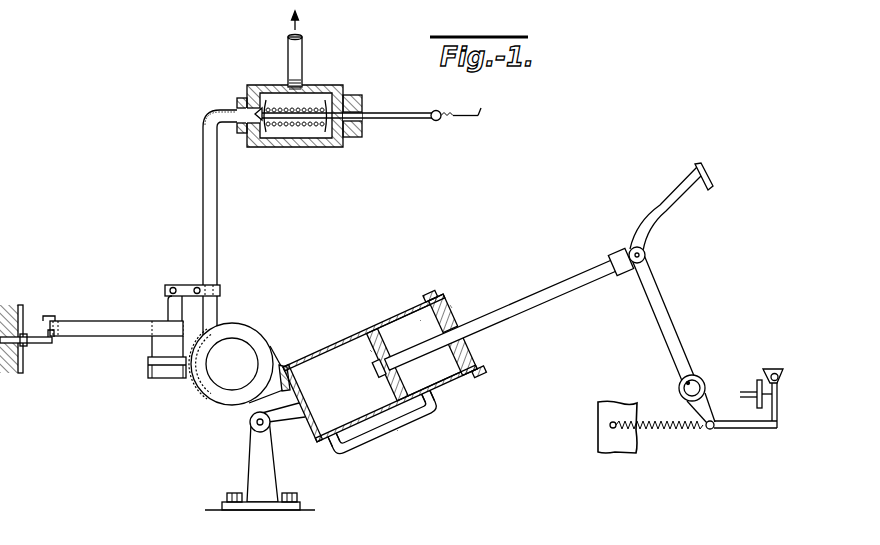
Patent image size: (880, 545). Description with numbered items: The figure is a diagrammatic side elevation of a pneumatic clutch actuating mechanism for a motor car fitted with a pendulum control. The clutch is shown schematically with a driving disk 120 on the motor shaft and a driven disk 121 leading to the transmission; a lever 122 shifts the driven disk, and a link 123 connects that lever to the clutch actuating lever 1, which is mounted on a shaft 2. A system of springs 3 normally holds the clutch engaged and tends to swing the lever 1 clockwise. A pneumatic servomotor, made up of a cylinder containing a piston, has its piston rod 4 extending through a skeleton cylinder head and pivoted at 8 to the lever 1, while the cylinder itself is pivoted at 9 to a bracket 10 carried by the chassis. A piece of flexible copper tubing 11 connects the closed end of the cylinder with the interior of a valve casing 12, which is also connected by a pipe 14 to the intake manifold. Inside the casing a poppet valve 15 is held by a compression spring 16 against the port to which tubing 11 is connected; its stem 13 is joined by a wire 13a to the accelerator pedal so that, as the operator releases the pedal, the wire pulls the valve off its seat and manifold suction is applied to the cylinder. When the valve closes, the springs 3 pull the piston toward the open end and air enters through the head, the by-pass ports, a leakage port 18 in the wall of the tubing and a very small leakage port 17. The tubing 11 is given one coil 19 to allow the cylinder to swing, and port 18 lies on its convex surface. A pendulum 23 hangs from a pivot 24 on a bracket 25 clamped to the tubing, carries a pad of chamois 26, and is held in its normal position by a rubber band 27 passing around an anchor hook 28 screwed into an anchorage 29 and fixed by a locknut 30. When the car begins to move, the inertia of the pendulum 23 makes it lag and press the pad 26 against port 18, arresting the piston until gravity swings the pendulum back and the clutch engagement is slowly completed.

The clutch actuating lever 1 is at (658, 303).
The shaft 2 is at (697, 383).
The system of springs 3 is at (655, 428).
The piston rod 4 is at (563, 296).
The pivot 8 is at (645, 251).
The pivot 9 is at (257, 424).
The bracket 10 is at (272, 480).
The flexible copper tubing 11 is at (212, 213).
The valve casing 12 is at (262, 88).
The valve stem 13 is at (390, 112).
The wire 13a is at (470, 110).
The pipe 14 is at (300, 52).
The poppet valve 15 is at (266, 124).
The compression spring 16 is at (322, 128).
The leakage port 17 is at (206, 149).
The leakage port 18 is at (200, 376).
The coil 19 is at (258, 338).
The pendulum 23 is at (159, 318).
The pivot 24 is at (171, 286).
The bracket 25 is at (190, 284).
The pad of chamois 26 is at (148, 369).
The rubber band 27 is at (95, 333).
The anchor hook 28 is at (47, 318).
The anchorage 29 is at (17, 300).
The locknut 30 is at (25, 344).
The driving disk 120 is at (762, 377).
The driven disk 121 is at (757, 402).
The lever 122 is at (780, 428).
The link 123 is at (722, 428).